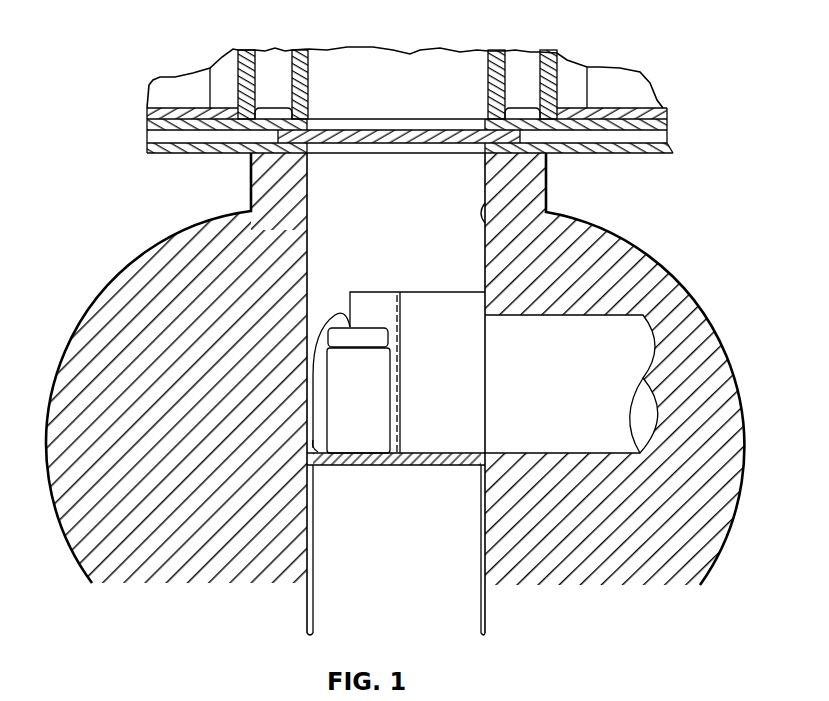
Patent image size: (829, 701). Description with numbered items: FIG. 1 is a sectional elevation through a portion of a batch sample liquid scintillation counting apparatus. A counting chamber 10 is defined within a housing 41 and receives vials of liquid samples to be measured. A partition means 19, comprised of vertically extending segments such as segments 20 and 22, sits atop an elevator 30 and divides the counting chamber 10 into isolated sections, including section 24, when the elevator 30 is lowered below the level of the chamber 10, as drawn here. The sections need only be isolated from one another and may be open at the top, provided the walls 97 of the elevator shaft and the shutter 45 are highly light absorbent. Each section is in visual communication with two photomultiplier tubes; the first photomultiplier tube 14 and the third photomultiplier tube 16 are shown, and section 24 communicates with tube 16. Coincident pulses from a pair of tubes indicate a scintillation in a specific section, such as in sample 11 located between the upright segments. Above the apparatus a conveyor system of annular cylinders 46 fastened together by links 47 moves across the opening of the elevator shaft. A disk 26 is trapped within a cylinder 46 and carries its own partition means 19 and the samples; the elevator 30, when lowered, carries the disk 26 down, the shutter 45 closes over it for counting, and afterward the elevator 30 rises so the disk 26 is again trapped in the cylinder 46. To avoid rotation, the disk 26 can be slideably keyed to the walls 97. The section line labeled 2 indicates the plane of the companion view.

The section line 2- 2 is at (283, 312).
The counting chamber 10 is at (246, 338).
The sample 11 is at (366, 414).
The first photomultiplier tube 14 is at (335, 322).
The third photomultiplier tube 16 is at (568, 400).
The partition means 19 is at (421, 278).
The vertically extending segment 20 is at (368, 292).
The vertically extending segment 22 is at (448, 292).
The isolated section 24 is at (449, 396).
The disk 26 is at (315, 443).
The elevator 30 is at (409, 536).
The housing 41 is at (127, 265).
The shutter 45 is at (252, 149).
The annular cylinder 46 is at (282, 50).
The link 47 is at (268, 118).
The wall of elevator shaft 97 is at (487, 204).